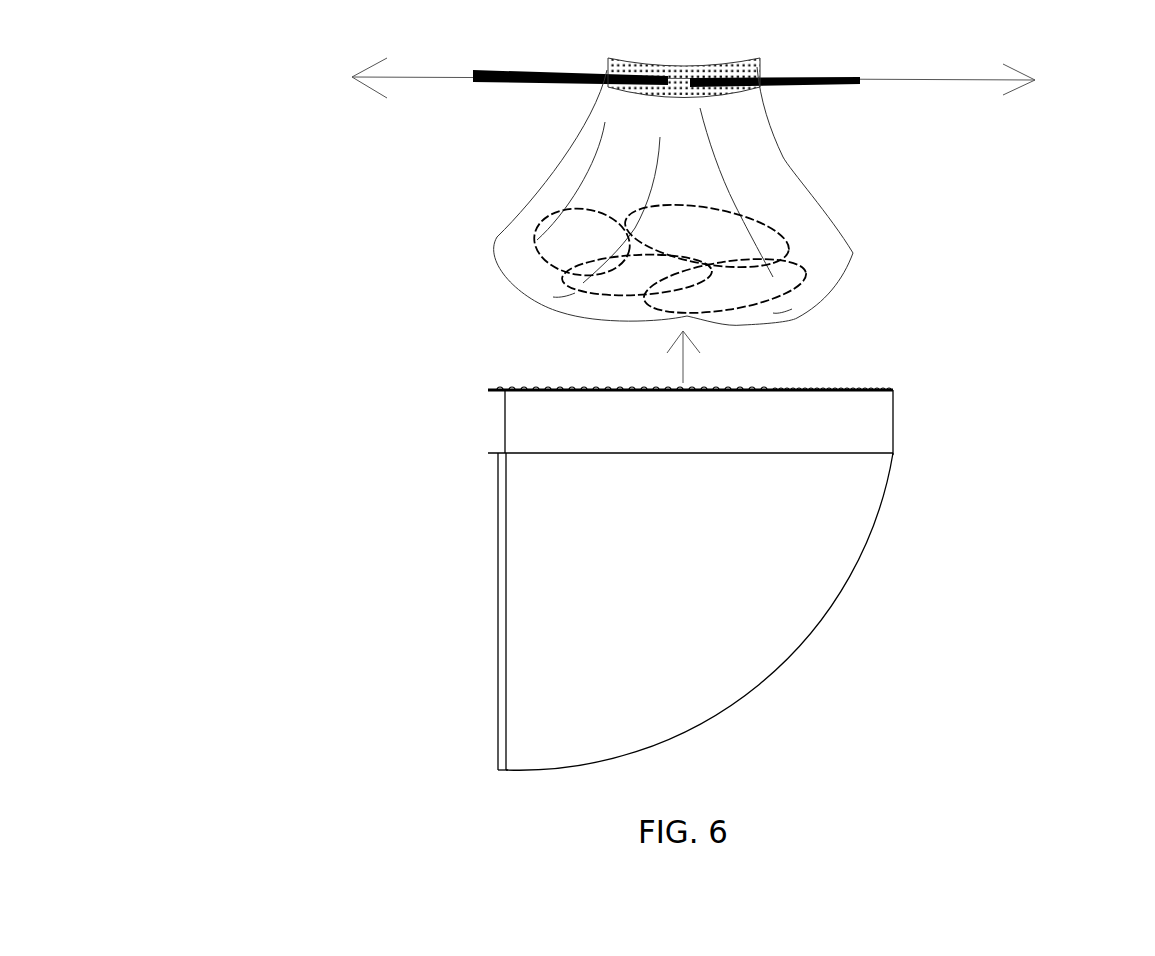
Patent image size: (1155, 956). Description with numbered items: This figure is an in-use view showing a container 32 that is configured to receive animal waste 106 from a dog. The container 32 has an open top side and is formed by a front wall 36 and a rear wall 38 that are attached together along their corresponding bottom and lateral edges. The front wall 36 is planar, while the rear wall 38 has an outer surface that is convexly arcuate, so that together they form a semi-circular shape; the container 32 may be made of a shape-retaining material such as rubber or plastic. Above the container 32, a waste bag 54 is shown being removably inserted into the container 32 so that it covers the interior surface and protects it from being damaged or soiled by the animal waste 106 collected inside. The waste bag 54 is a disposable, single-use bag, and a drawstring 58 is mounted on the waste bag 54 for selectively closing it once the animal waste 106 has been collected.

The drawstring 58 is at (808, 76).
The waste bag 54 is at (795, 187).
The animal waste 106 is at (540, 243).
The container 32 is at (805, 661).
The front wall 36 is at (498, 582).
The rear wall 38 is at (868, 532).